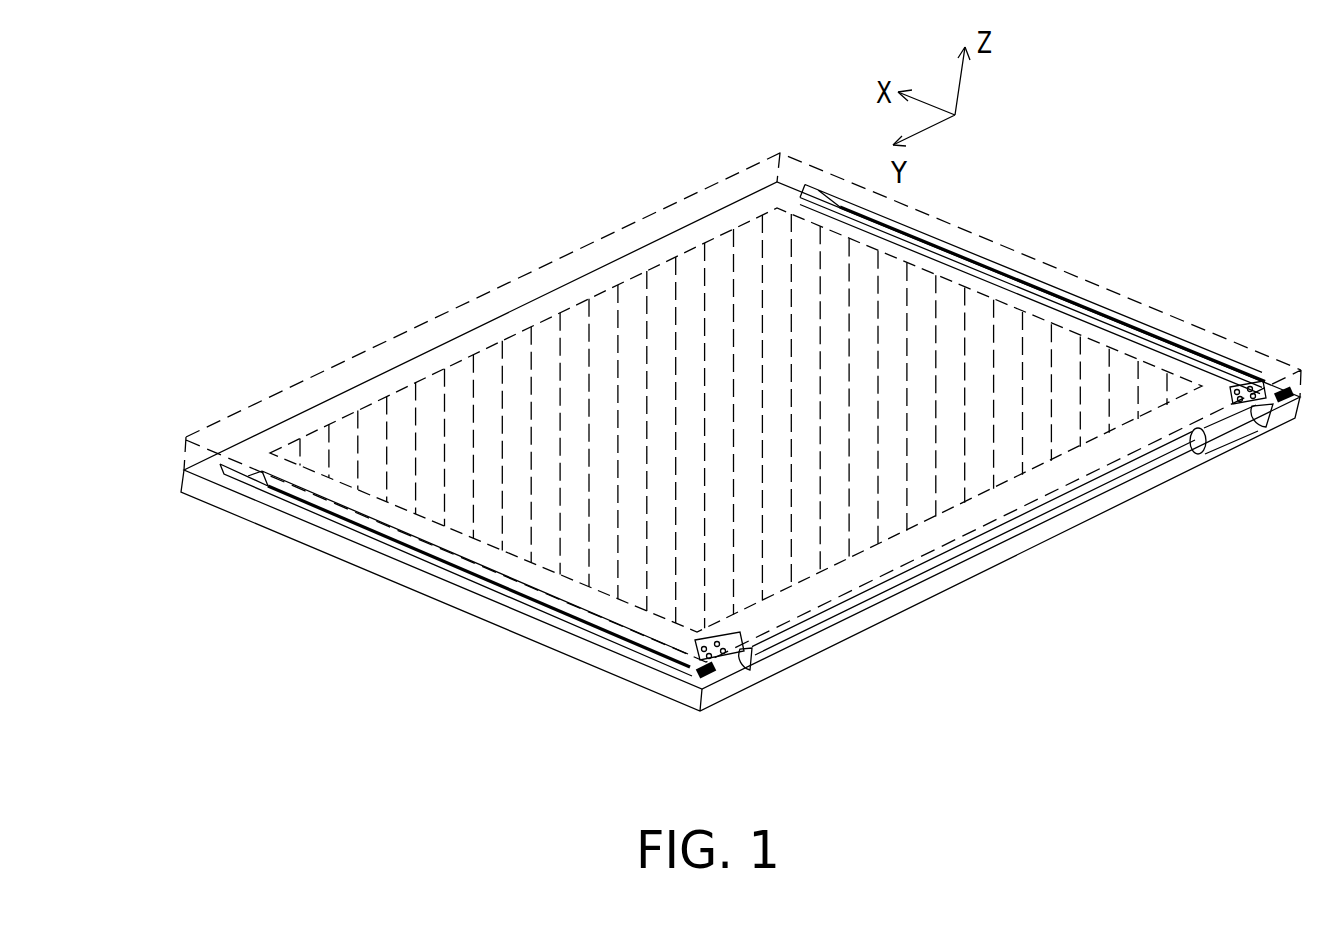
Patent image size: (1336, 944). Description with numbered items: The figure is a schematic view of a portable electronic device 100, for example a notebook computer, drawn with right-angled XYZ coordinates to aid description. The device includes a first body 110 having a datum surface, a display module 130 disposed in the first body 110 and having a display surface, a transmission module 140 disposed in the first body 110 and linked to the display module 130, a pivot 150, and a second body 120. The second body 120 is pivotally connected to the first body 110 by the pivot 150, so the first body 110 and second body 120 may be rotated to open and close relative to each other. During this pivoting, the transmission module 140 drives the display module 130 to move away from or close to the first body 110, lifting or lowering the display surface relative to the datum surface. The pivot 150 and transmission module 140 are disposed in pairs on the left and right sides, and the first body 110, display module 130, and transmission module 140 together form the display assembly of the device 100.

The portable electronic device 100 is at (1319, 712).
The first body 110 is at (348, 356).
The second body 120 is at (265, 512).
The display module 130 is at (692, 262).
The transmission module 140 is at (692, 672).
The pivot 150 is at (780, 655).